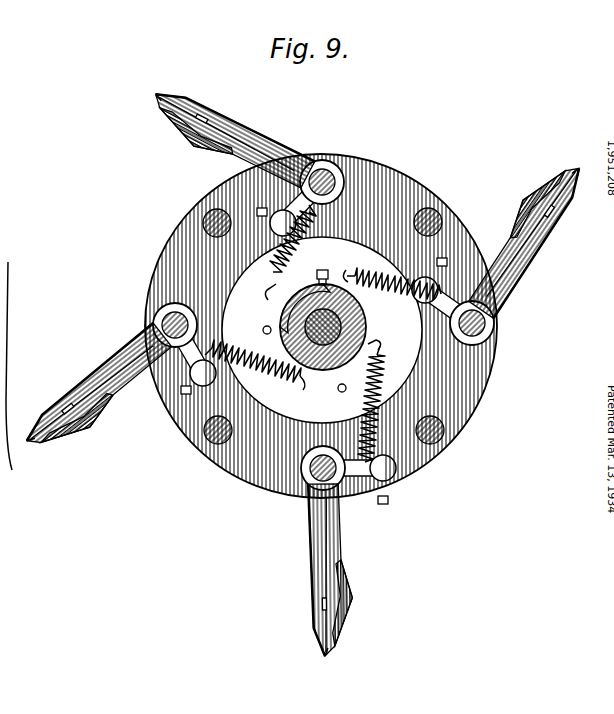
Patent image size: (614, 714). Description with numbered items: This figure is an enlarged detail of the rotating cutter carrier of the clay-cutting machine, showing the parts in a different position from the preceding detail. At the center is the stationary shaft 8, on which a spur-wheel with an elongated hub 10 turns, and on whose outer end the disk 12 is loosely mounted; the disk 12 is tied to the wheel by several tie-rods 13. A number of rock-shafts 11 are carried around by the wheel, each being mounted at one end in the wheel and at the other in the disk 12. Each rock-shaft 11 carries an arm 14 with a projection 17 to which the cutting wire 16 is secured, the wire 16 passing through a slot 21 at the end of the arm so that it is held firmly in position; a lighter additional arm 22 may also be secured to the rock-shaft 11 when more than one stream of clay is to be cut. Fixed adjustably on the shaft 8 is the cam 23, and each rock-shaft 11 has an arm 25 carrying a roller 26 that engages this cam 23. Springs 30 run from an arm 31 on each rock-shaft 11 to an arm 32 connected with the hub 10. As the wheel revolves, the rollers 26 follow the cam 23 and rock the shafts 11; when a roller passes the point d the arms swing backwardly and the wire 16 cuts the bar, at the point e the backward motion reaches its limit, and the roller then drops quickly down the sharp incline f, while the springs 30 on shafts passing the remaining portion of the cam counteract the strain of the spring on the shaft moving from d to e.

The stationary shaft 8 is at (358, 341).
The elongated hub 10 is at (362, 305).
The rock-shaft 11 is at (341, 181).
The disk 12 is at (424, 192).
The tie-rod 13 is at (219, 212).
The arm 14 is at (277, 147).
The wire 16 is at (5, 405).
The projection 17 is at (236, 122).
The slot 21 is at (579, 174).
The additional arm 22 is at (192, 128).
The cam 23 is at (380, 330).
The arm 25 is at (318, 221).
The roller 26 is at (205, 385).
The spring 30 is at (297, 244).
The arm 31 is at (304, 205).
The arm 32 is at (348, 268).
The point d is at (208, 284).
The point e is at (393, 438).
The incline f is at (388, 437).